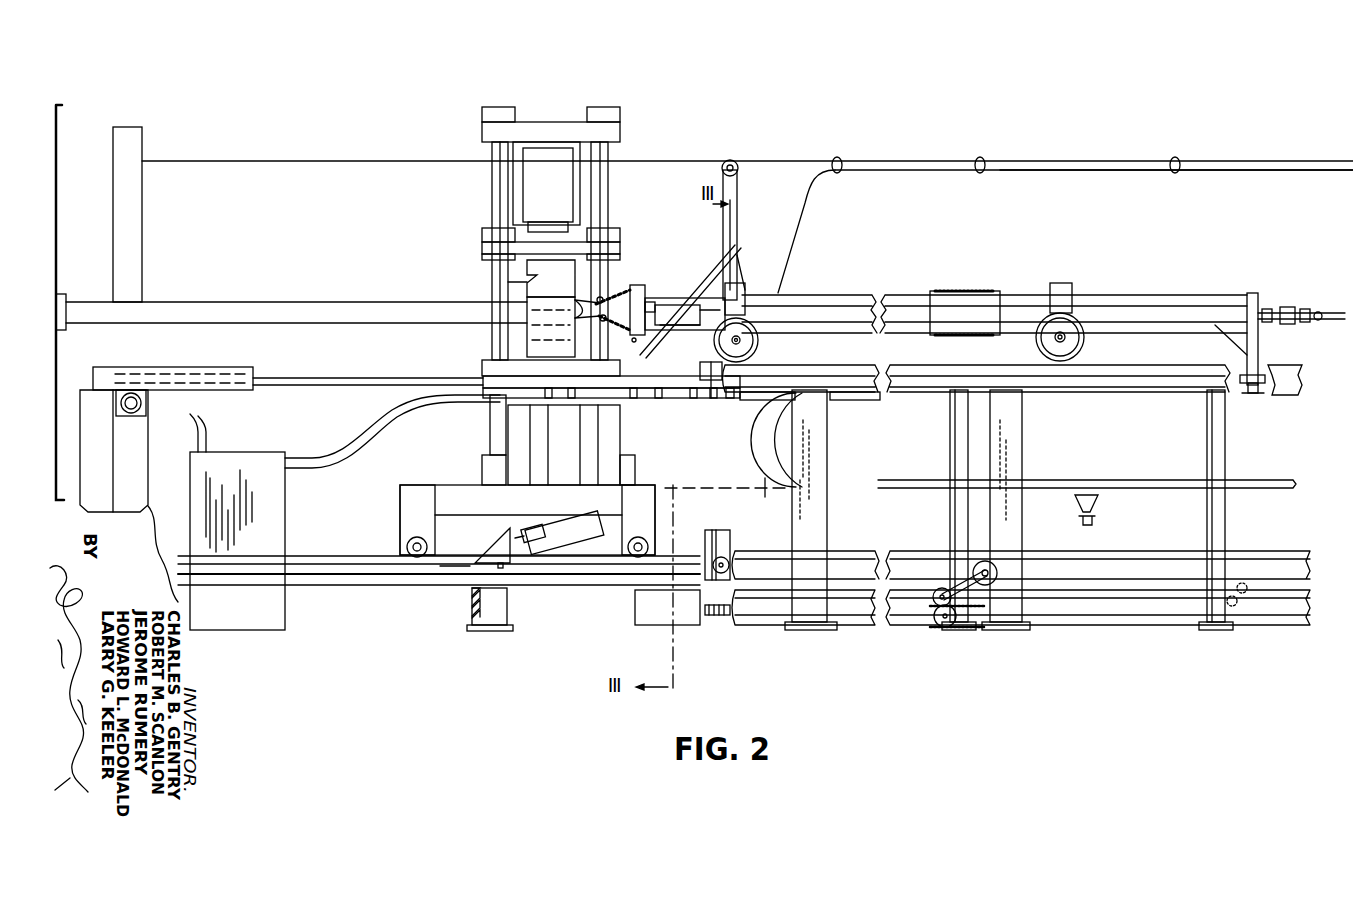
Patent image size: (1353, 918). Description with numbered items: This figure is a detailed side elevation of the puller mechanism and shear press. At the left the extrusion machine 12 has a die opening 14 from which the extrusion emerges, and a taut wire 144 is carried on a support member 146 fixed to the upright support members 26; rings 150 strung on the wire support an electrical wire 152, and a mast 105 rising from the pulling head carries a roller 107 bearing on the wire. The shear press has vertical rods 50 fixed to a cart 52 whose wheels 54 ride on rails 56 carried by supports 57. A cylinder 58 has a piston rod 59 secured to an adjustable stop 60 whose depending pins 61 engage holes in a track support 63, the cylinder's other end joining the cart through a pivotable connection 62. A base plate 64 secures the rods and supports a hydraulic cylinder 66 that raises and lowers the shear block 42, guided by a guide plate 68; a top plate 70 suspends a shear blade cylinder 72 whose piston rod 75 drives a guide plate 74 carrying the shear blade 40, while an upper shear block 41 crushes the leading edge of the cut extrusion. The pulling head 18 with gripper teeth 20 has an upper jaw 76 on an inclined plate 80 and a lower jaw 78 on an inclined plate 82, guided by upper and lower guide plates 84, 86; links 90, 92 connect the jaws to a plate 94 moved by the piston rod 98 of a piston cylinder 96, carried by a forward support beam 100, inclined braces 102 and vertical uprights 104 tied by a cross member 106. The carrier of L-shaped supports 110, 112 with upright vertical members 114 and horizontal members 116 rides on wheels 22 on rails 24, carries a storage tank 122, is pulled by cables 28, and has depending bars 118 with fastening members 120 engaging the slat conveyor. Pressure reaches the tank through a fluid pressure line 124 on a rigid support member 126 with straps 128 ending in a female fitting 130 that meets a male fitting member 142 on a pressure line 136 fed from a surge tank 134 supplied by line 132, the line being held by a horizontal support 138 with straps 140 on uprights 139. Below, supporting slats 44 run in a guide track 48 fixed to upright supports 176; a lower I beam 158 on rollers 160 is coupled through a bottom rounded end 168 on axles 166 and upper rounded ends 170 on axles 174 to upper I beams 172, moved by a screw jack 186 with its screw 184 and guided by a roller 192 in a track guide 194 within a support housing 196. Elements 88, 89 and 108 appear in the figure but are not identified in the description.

The extrusion machine 12 is at (58, 190).
The die opening 14 is at (66, 300).
The pulling head 18 is at (679, 234).
The gripper teeth 20 is at (637, 278).
The wheels 22 is at (762, 344).
The rails 24 is at (210, 367).
The upright support members 26 is at (154, 465).
The cables 28 is at (283, 378).
The shear blade 40 is at (566, 276).
The upper shear block 41 is at (492, 286).
The shear block 42 is at (538, 352).
The supporting slats 44 is at (1098, 503).
The fixed guide track 48 is at (850, 393).
The vertical rods 50 is at (492, 175).
The cart 52 is at (405, 484).
The wheels 54 is at (406, 545).
The rails 56 is at (333, 556).
The supports 57 is at (480, 600).
The cylinder 58 is at (572, 548).
The piston rod 59 is at (530, 528).
The adjustable stop 60 is at (497, 536).
The depending pins 61 is at (505, 567).
The pivotable connection 62 is at (640, 502).
The track support 63 is at (455, 568).
The base plate 64 is at (492, 470).
The hydraulic cylinder 66 is at (530, 469).
The guide plate 68 is at (595, 362).
The top plate 70 is at (557, 132).
The shear blade cylinder 72 is at (538, 170).
The guide plate 74 is at (612, 244).
The piston rod 75 is at (555, 224).
The upper jaw 76 is at (600, 292).
The lower jaw 78 is at (600, 328).
The inclined plate 80 is at (612, 297).
The inclined plate 82 is at (622, 333).
The upper guide plate 84 is at (622, 290).
The lower guide plate 86 is at (635, 345).
The block 88 is at (651, 299).
The slot 89 is at (680, 338).
The link 90 is at (663, 300).
The link 92 is at (607, 336).
The plate 94 is at (675, 310).
The piston cylinder 96 is at (702, 283).
The piston rod 98 is at (698, 328).
The forward support beam 100 is at (695, 375).
The inclined braces 102 is at (733, 288).
The vertical uprights 104 is at (746, 290).
The mast 105 is at (738, 186).
The cross members 106 is at (746, 300).
The roller 107 is at (728, 160).
The rail 108 is at (752, 310).
The L-shaped supports 110 is at (917, 294).
The L-shaped supports 112 is at (903, 328).
The upright vertical members 114 is at (1062, 296).
The horizontal members 116 is at (1066, 284).
The depending bar 118 is at (1258, 346).
The fastening member 120 is at (1262, 394).
The storage tank 122 is at (983, 293).
The fluid pressure line 124 is at (713, 399).
The rigid support member 126 is at (790, 362).
The straps 128 is at (694, 399).
The female fitting 130 is at (660, 399).
The line 132 is at (204, 424).
The surge tank 134 is at (240, 458).
The pressure line 136 is at (325, 458).
The horizontal support 138 is at (549, 399).
The uprights 139 is at (505, 436).
The straps 140 is at (571, 399).
The male fitting member 142 is at (633, 399).
The taut wire 144 is at (803, 158).
The support member 146 is at (135, 210).
The rings 150 is at (985, 157).
The electrical wire 152 is at (1118, 172).
The I beam 158 is at (1125, 596).
The rollers 160 is at (945, 630).
The axles 166 is at (938, 602).
The bottom rounded end 168 is at (938, 590).
The upper rounded ends 170 is at (993, 578).
The upper I beams 172 is at (1175, 552).
The axles 174 is at (975, 566).
The upright supports 176 is at (1215, 458).
The screw 184 is at (720, 616).
The screw jack 186 is at (655, 616).
The roller 192 is at (735, 572).
The track guide 194 is at (728, 548).
The support housing 196 is at (698, 517).